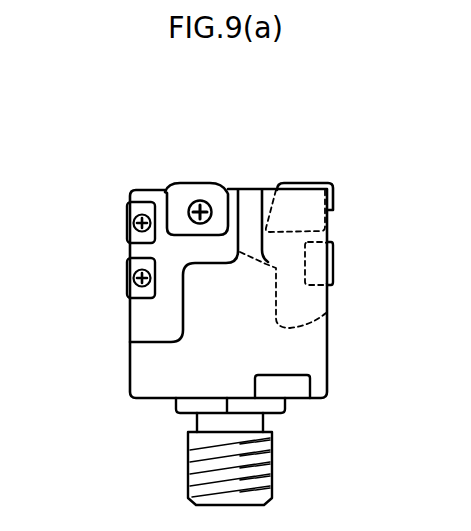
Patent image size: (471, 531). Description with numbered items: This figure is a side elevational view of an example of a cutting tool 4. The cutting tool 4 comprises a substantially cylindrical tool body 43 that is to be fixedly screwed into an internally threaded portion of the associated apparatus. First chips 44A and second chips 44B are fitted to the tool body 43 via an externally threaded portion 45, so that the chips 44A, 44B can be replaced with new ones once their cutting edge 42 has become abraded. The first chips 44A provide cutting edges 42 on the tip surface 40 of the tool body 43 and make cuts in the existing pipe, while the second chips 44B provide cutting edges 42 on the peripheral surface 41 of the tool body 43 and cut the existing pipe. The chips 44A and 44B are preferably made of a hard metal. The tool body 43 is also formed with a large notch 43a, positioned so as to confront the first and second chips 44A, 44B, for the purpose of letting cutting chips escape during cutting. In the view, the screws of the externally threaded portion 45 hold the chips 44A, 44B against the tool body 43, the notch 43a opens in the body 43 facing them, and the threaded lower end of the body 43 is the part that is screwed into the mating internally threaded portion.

The cutting tool 4 is at (387, 144).
The tip surface 40 is at (150, 189).
The peripheral surface 41 is at (165, 288).
The cutting edge 42 is at (190, 184).
The tool body 43 is at (308, 343).
The notch 43a is at (167, 286).
The first chip 44A is at (221, 190).
The second chip 44B is at (127, 260).
The externally threaded portion 45 is at (199, 202).